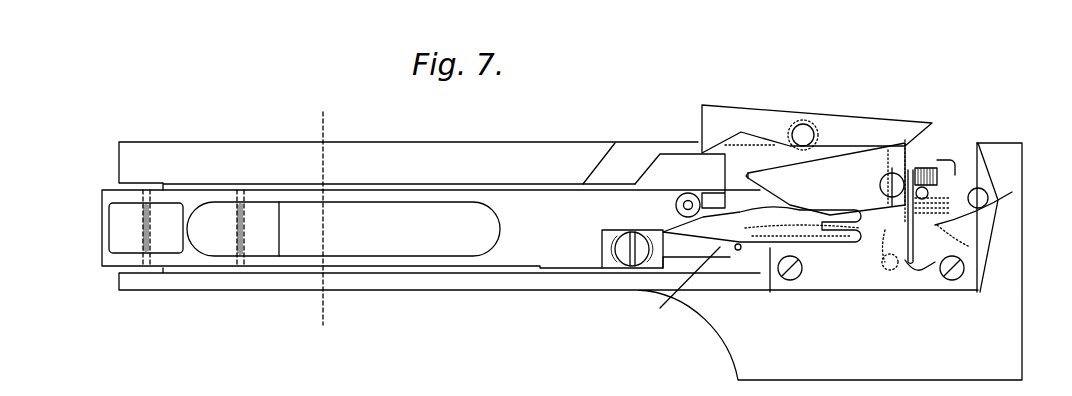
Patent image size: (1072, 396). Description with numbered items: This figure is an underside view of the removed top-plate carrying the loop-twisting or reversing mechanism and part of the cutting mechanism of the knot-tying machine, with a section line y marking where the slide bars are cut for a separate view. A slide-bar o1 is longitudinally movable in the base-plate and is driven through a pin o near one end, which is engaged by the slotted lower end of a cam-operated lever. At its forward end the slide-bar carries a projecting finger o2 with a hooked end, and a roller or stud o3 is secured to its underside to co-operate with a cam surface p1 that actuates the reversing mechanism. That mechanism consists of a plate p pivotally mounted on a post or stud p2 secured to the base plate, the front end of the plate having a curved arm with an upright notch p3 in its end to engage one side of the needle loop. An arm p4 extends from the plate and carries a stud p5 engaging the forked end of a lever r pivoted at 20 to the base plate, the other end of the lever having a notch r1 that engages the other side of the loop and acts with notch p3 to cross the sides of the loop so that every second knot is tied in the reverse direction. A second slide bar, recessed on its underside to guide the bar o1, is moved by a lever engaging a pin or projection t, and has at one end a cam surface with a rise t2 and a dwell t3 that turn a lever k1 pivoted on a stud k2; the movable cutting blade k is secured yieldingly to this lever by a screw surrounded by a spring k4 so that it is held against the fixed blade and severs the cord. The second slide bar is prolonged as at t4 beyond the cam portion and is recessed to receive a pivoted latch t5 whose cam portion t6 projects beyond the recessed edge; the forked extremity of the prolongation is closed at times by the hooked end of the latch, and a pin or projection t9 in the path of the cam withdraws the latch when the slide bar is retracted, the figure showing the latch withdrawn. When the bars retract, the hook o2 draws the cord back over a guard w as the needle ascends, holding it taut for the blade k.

The pin o is at (143, 250).
The slide-bar o1 is at (200, 258).
The projecting finger o2 is at (742, 252).
The roller or stud o3 is at (676, 205).
The pin or projection t is at (244, 230).
The rise t2 is at (648, 168).
The dwell t3 is at (667, 160).
The prolongation t4 is at (797, 235).
The pivoted latch t5 is at (850, 258).
The cam portion t6 is at (738, 250).
The pin or projection t9 is at (679, 287).
The section line y is at (318, 217).
The movable cutting blade k is at (905, 135).
The lever k1 is at (748, 118).
The stud k2 is at (806, 130).
The spring k4 is at (930, 170).
The plate p is at (826, 181).
The cam surface p1 is at (768, 178).
The post or stud p2 is at (912, 176).
The upright notch p3 is at (900, 170).
The arm p4 is at (895, 220).
The stud p5 is at (888, 270).
The lever r is at (920, 276).
The notch r1 is at (988, 198).
The guard w is at (962, 236).
The pivot 20 is at (951, 261).